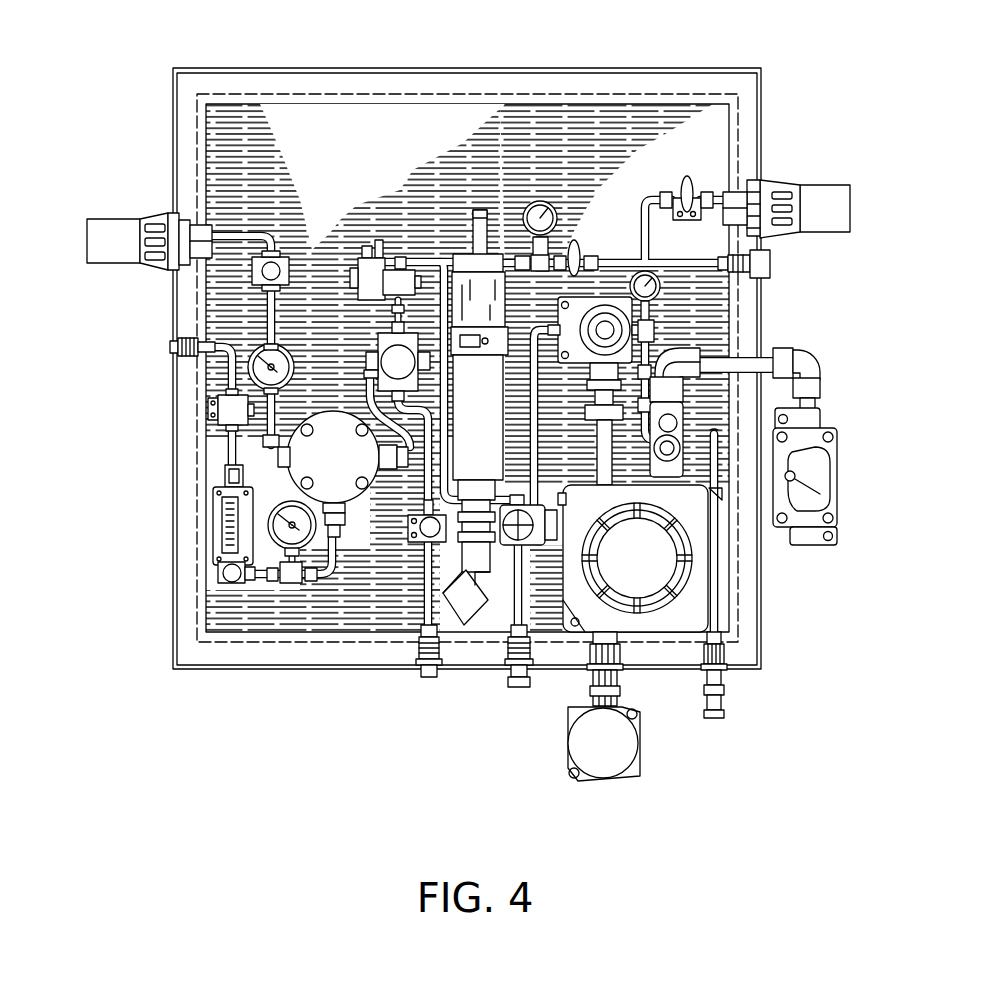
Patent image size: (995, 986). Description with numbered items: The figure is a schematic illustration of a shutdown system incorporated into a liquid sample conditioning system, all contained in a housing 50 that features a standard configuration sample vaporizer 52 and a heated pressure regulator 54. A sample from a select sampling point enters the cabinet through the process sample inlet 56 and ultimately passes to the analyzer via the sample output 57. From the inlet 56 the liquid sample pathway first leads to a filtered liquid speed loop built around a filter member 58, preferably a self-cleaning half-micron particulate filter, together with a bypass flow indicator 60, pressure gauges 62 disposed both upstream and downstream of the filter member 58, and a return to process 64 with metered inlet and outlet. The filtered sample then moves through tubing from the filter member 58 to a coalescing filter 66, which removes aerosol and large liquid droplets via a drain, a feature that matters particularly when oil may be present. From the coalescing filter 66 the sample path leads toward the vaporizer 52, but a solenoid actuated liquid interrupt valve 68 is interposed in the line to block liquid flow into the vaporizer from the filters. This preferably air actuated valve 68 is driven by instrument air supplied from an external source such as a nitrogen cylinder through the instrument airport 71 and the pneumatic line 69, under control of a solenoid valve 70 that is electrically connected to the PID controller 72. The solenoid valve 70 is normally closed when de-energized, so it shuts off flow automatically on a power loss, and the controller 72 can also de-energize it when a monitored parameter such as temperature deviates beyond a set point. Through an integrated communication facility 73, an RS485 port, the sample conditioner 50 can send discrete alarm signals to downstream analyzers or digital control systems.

The housing 50 is at (146, 108).
The sample vaporizer 52 is at (498, 280).
The heated pressure regulator 54 is at (670, 328).
The process sample inlet 56 is at (128, 218).
The sample output 57 is at (775, 185).
The filter member 58 is at (347, 477).
The bypass flow indicator 60 is at (215, 523).
The pressure gauge 62 is at (250, 366).
The return to process 64 is at (170, 348).
The coalescing filter 66 is at (392, 352).
The liquid interrupt valve 68 is at (383, 258).
The pneumatic line 69 is at (450, 508).
The solenoid valve 70 is at (537, 545).
The instrument airport 71 is at (518, 690).
The PID controller 72 is at (693, 593).
The integrated communication facility 73 is at (622, 762).